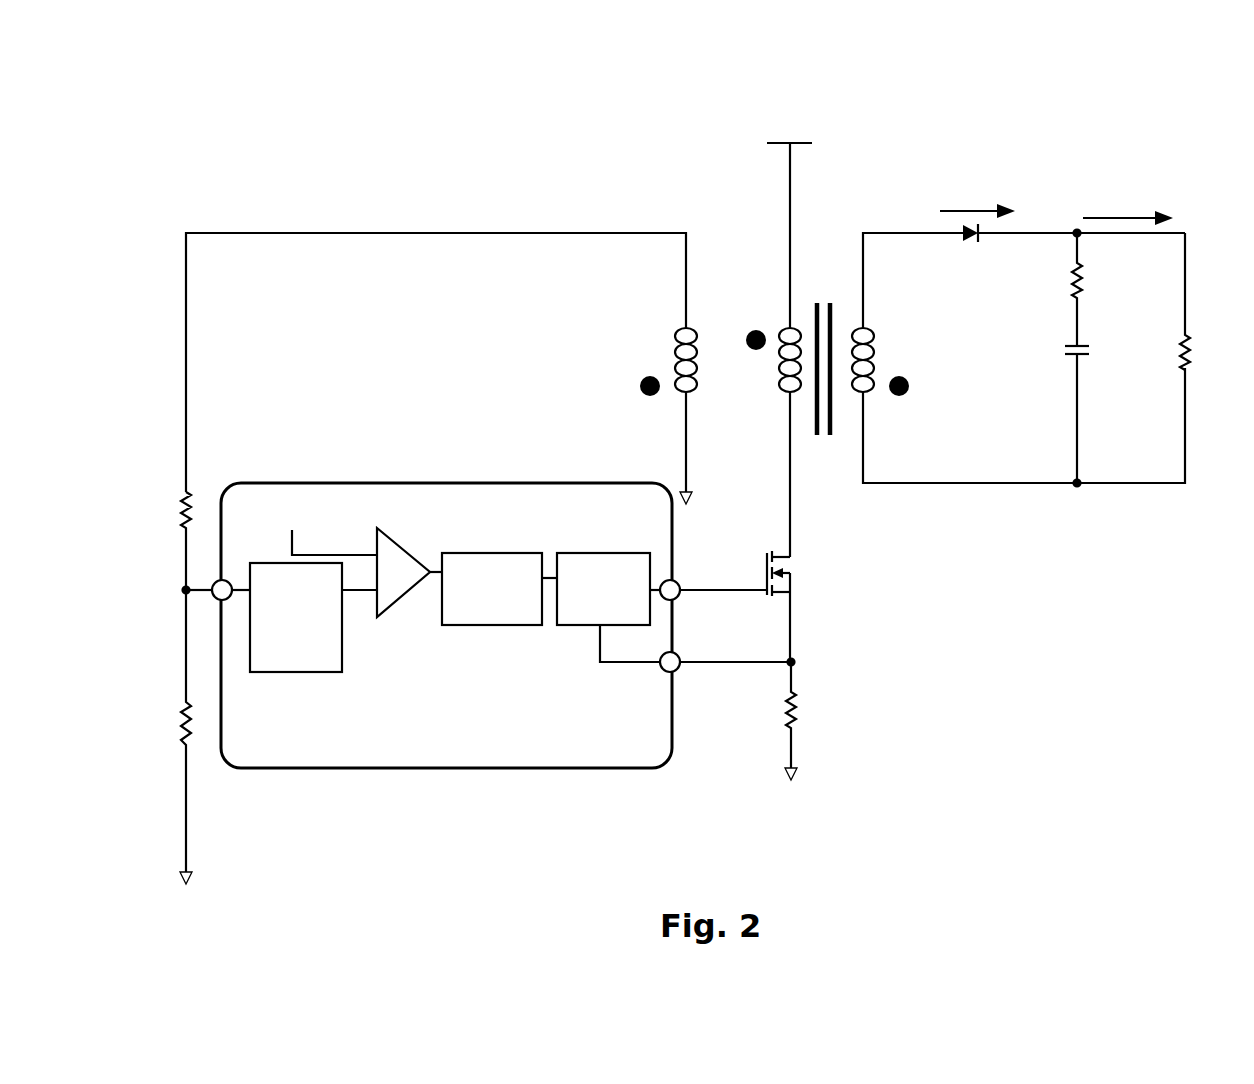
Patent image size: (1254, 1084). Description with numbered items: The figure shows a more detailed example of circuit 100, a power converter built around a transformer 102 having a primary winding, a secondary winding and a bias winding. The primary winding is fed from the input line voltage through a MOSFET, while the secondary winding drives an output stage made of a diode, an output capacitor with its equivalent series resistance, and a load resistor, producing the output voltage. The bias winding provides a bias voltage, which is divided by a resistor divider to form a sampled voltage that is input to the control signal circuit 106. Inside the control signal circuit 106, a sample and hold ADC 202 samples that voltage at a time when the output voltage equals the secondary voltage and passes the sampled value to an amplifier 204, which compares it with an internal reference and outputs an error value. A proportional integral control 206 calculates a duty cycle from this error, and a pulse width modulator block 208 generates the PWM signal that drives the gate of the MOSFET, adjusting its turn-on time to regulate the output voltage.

The circuit 100 is at (1124, 136).
The transformer 102 is at (766, 365).
The control signal circuit 106 is at (441, 768).
The ADC 202 is at (285, 672).
The amplifier 204 is at (395, 606).
The proportional integral (PI) control 206 is at (488, 625).
The pulse width modulator (PWM) block 208 is at (578, 625).